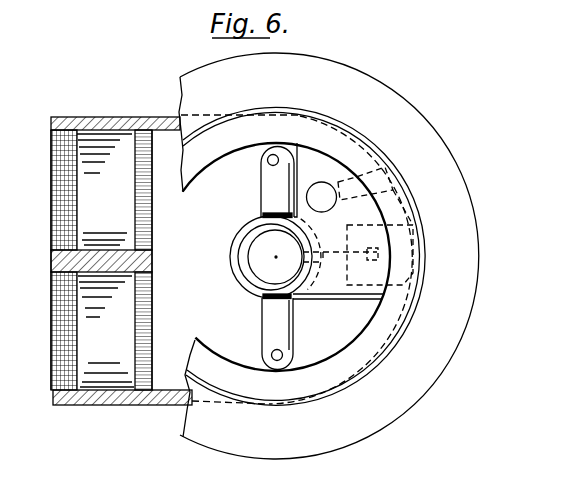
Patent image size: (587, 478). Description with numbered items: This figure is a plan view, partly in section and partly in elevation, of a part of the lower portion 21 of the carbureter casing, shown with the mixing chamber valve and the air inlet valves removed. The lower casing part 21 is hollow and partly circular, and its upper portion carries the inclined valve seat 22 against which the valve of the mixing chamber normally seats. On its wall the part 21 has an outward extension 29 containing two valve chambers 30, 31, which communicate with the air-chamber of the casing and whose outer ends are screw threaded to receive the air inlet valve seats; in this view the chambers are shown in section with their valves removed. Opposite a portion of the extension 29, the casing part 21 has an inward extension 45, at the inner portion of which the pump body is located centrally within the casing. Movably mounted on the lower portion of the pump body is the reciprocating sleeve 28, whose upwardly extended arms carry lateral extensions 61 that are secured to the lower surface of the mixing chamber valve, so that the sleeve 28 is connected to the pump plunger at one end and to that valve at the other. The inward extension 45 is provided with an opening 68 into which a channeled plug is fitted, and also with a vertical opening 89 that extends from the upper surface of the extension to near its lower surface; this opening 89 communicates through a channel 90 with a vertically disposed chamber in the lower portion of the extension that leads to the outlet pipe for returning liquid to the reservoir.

The lower part of the casing 21 is at (478, 263).
The valve seat 22 is at (200, 163).
The reciprocating sleeve 28 is at (229, 256).
The extension 29 is at (96, 117).
The valve chamber 30 is at (101, 190).
The valve chamber 31 is at (101, 331).
The inward extension 45 is at (295, 149).
The lateral extension 61 is at (266, 173).
The opening 68 is at (423, 273).
The vertical opening 89 is at (313, 183).
The channel 90 is at (348, 180).